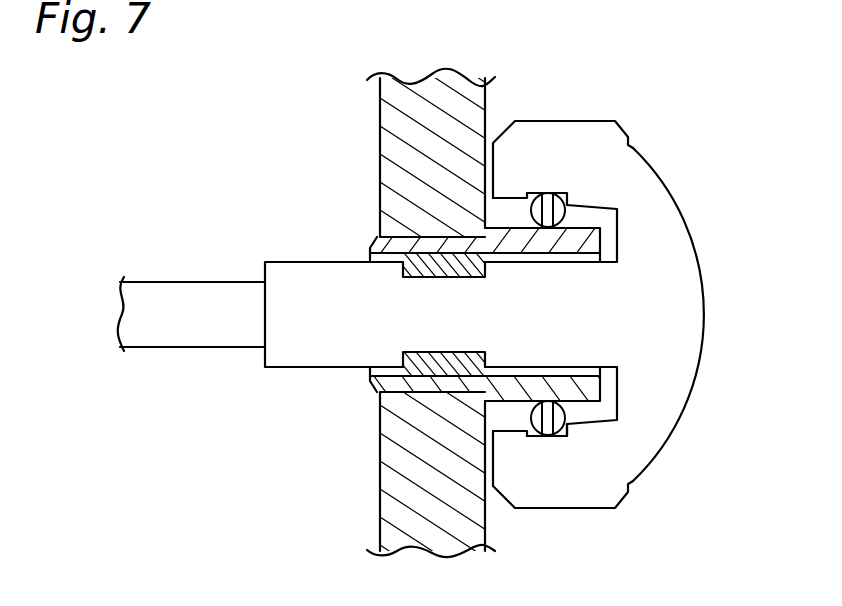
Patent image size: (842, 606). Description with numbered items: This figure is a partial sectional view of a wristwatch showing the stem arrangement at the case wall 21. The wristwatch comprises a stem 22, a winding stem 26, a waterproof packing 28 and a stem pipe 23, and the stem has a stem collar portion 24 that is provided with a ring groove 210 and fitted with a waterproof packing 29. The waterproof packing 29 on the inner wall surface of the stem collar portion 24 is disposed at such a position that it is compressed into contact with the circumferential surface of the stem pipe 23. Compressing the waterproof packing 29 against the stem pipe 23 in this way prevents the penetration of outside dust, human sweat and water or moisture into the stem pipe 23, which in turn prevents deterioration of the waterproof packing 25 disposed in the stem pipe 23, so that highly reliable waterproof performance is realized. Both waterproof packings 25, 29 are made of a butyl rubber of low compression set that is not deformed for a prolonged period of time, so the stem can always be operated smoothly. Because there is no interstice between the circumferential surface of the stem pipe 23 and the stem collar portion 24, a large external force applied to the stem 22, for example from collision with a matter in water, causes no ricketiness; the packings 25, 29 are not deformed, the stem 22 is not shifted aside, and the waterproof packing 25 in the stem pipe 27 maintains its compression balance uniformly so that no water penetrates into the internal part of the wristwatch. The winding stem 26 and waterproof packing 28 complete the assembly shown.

The wall 21 is at (430, 87).
The stem 22 is at (704, 307).
The stem pipe 23 is at (566, 222).
The stem collar portion 24 is at (540, 137).
The waterproof packing 25 is at (395, 241).
The winding stem 26 is at (180, 297).
The stem pipe 27 is at (283, 327).
The waterproof packing 28 is at (440, 278).
The waterproof packing 29 is at (555, 435).
The ring groove 210 is at (538, 435).